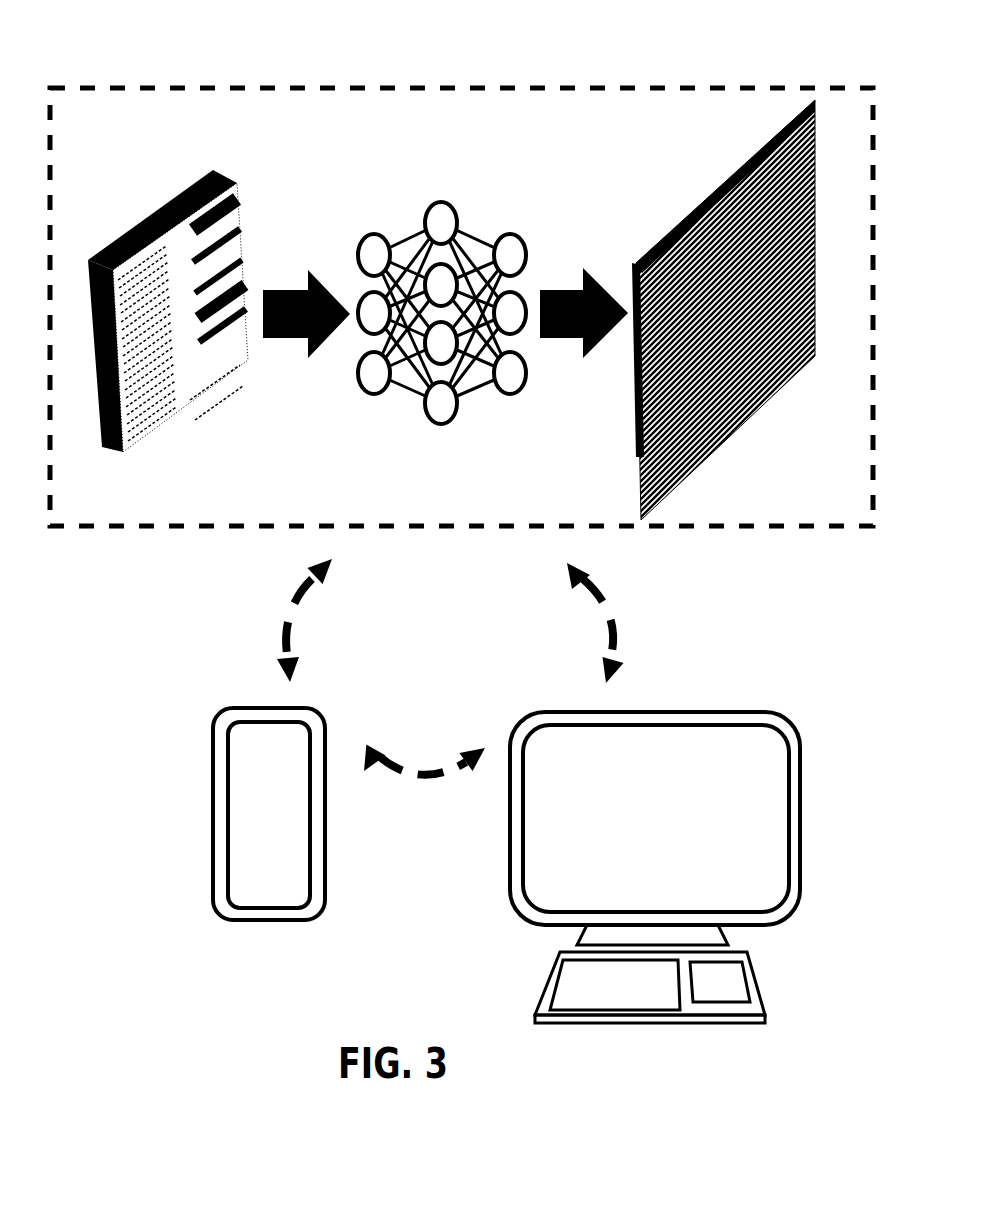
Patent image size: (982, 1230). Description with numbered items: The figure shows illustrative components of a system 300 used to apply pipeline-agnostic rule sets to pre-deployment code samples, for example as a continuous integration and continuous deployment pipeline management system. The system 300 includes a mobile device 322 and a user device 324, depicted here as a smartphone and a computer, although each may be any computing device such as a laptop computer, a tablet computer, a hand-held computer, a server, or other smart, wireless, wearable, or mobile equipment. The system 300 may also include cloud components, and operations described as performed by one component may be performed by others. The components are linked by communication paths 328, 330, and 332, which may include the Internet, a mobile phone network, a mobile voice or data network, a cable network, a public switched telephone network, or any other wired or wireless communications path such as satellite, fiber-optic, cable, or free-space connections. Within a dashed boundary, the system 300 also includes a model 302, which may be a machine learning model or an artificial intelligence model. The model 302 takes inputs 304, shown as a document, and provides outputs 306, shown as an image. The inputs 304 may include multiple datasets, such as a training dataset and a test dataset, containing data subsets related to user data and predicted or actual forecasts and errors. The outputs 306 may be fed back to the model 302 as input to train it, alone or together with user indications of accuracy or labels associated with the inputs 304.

The system 300 is at (479, 32).
The model 302 is at (467, 171).
The inputs 304 is at (184, 432).
The outputs 306 is at (772, 432).
The mobile device 322 is at (246, 788).
The user device 324 is at (748, 807).
The communication path 328 is at (262, 600).
The communication path 330 is at (648, 610).
The communication path 332 is at (414, 785).